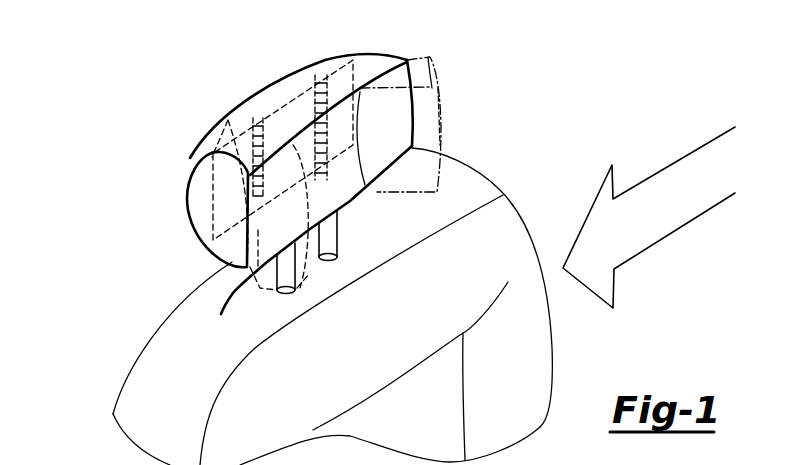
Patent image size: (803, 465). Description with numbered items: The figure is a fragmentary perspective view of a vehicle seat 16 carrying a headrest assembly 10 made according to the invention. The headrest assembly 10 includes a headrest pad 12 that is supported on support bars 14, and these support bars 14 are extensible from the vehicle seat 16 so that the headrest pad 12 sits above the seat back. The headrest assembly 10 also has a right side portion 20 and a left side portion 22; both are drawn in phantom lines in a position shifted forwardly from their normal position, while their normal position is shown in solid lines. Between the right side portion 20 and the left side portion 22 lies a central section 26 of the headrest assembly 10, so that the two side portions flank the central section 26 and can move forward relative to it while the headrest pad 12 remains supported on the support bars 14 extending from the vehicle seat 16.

The headrest assembly 10 is at (240, 106).
The headrest pad 12 is at (201, 200).
The support bars 14 is at (339, 246).
The vehicle seat 16 is at (137, 390).
The right side portion 20 is at (221, 314).
The left side portion 22 is at (387, 153).
The central section 26 is at (287, 118).